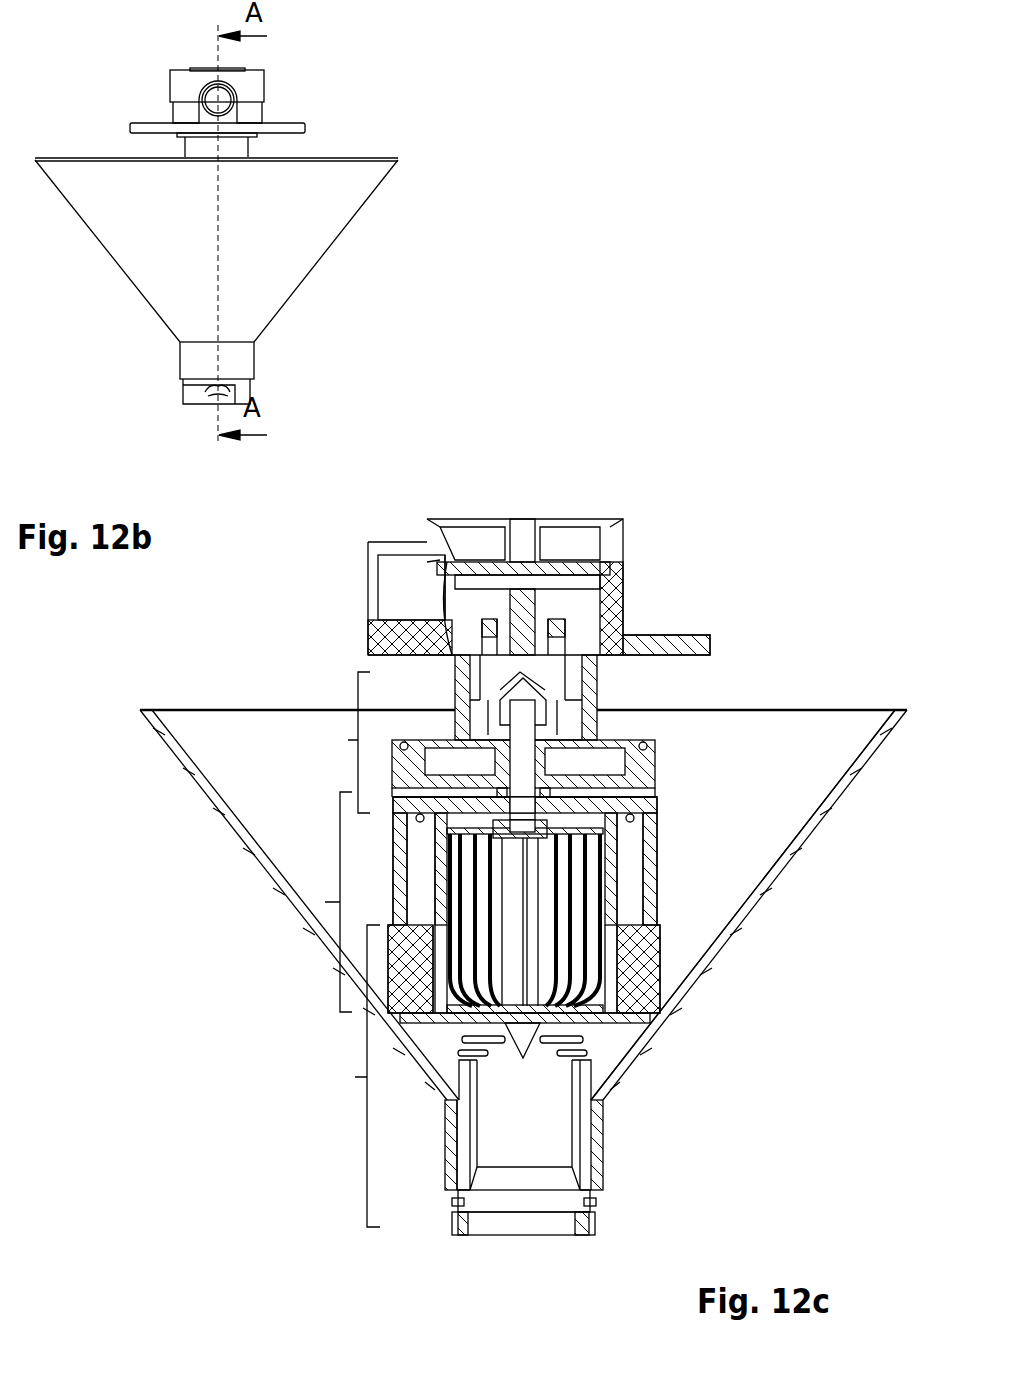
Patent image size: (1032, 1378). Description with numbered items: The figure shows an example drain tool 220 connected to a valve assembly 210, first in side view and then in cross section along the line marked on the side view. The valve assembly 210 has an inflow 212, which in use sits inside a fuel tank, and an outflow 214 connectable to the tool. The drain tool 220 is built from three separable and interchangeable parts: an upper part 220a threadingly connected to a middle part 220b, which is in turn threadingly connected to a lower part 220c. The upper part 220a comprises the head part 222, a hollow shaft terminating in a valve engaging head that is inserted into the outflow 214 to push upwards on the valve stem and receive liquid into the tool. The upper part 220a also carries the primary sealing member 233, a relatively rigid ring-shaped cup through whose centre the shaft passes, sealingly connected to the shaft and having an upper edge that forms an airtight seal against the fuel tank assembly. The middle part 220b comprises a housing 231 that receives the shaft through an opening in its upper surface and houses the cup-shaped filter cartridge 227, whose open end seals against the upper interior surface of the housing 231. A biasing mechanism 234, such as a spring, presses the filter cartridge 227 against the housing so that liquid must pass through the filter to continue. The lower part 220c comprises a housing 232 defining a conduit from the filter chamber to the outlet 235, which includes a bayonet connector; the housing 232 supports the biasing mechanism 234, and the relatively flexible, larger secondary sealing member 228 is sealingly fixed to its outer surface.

In FIG. 12B, the valve assembly 210 is at (150, 70).
In FIG. 12C, the valve assembly 210 is at (699, 560).
In FIG. 12C, the inflow 212 is at (390, 590).
In FIG. 12C, the outflow 214 is at (595, 721).
In FIG. 12B, the drain tool 220 is at (360, 304).
In FIG. 12C, the drain tool 220 is at (734, 1105).
In FIG. 12C, the upper part 220a is at (348, 740).
In FIG. 12C, the middle part 220b is at (325, 902).
In FIG. 12C, the lower part 220c is at (355, 1077).
In FIG. 12C, the head part 222 is at (500, 695).
In FIG. 12C, the filter cartridge 227 is at (584, 917).
In FIG. 12C, the secondary sealing member 228 is at (727, 937).
In FIG. 12C, the housing 231 is at (648, 845).
In FIG. 12C, the housing 232 is at (580, 1140).
In FIG. 12C, the primary sealing member 233 is at (643, 757).
In FIG. 12C, the biasing mechanism 234 is at (582, 1040).
In FIG. 12C, the outlet 235 is at (500, 1220).